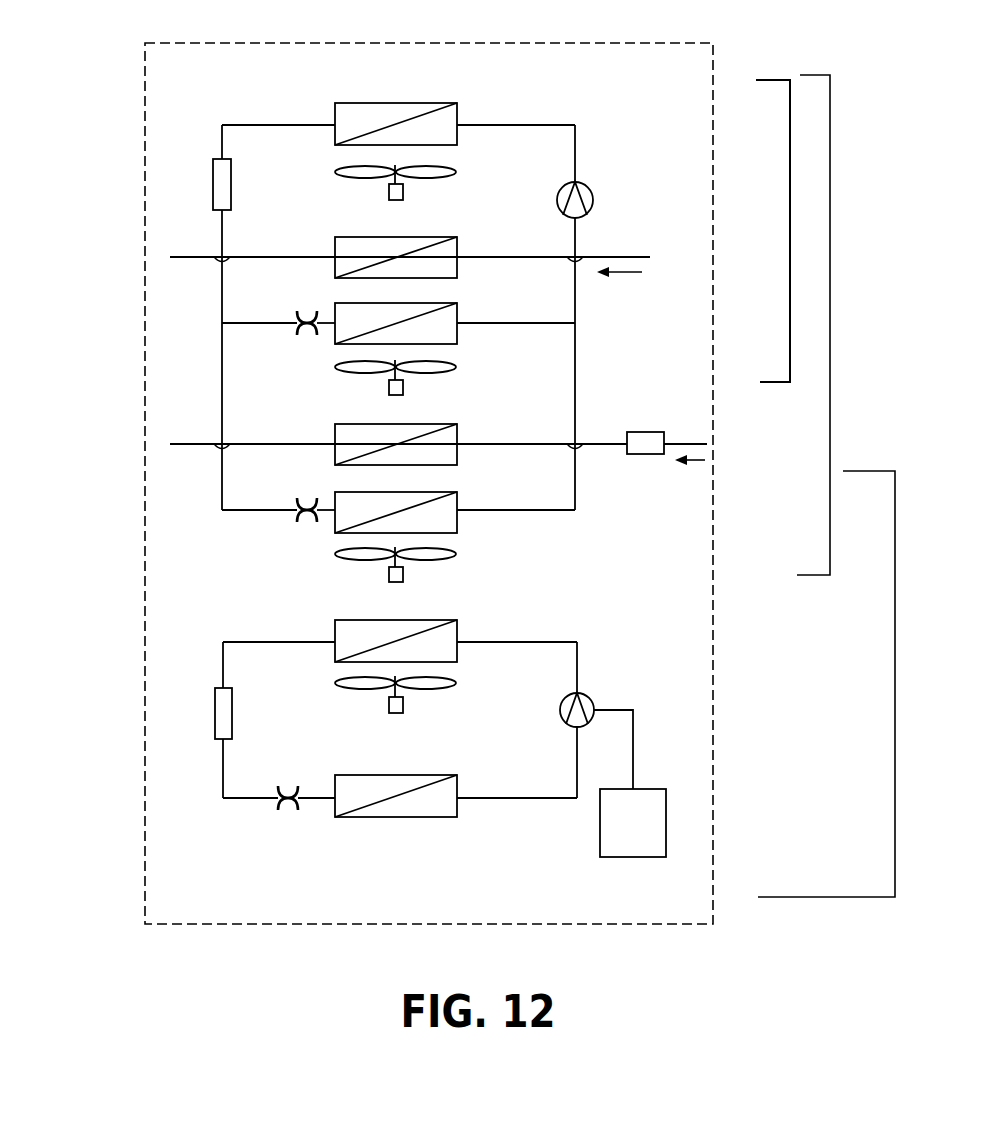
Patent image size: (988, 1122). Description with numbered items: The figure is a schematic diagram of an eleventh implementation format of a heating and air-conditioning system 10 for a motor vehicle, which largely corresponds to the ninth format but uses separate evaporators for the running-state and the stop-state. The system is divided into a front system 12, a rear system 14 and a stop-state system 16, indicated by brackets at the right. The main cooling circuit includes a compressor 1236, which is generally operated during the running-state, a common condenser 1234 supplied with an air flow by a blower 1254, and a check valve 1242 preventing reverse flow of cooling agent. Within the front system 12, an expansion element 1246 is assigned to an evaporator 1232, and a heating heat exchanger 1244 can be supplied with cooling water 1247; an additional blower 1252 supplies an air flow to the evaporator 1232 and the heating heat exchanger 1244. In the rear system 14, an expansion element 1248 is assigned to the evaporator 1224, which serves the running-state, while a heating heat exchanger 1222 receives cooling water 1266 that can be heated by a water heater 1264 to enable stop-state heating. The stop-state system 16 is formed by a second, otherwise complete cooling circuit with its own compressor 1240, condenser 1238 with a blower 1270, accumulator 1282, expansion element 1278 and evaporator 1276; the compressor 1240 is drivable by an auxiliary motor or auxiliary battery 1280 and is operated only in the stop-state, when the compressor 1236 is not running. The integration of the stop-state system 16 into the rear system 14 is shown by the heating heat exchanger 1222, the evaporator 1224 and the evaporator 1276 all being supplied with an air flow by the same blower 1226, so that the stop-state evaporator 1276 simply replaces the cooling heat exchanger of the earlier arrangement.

The heating and air-conditioning system 10 is at (100, 69).
The front system 12 is at (790, 280).
The rear system 14 is at (830, 478).
The stop-state system 16 is at (895, 720).
The heating heat exchanger 1222 is at (457, 436).
The evaporator 1224 is at (457, 525).
The blower 1226 is at (403, 576).
The evaporator 1232 is at (457, 318).
The condenser 1234 is at (412, 103).
The compressor 1236 is at (592, 196).
The condenser 1238 is at (457, 630).
The compressor 1240 is at (592, 704).
The check valve 1242 is at (213, 187).
The heating heat exchanger 1244 is at (352, 237).
The expansion element 1246 is at (305, 336).
The cooling water 1247 is at (642, 272).
The expansion element 1248 is at (305, 524).
The blower 1252 is at (403, 388).
The blower 1254 is at (403, 192).
The water heater 1264 is at (640, 432).
The cooling water 1266 is at (697, 461).
The blower 1270 is at (403, 702).
The evaporator 1276 is at (420, 812).
The expansion element 1278 is at (288, 812).
The auxiliary motor or auxiliary battery 1280 is at (638, 857).
The accumulator 1282 is at (215, 710).